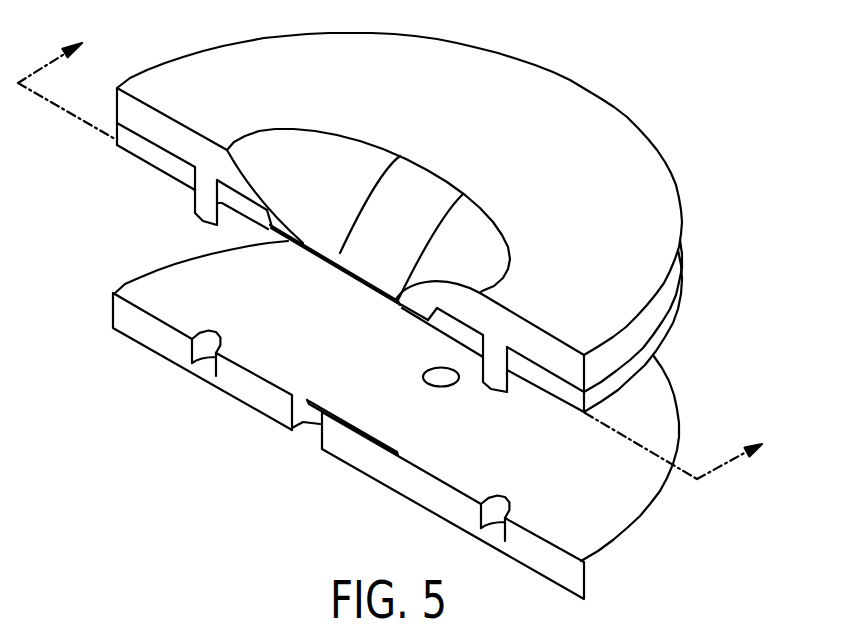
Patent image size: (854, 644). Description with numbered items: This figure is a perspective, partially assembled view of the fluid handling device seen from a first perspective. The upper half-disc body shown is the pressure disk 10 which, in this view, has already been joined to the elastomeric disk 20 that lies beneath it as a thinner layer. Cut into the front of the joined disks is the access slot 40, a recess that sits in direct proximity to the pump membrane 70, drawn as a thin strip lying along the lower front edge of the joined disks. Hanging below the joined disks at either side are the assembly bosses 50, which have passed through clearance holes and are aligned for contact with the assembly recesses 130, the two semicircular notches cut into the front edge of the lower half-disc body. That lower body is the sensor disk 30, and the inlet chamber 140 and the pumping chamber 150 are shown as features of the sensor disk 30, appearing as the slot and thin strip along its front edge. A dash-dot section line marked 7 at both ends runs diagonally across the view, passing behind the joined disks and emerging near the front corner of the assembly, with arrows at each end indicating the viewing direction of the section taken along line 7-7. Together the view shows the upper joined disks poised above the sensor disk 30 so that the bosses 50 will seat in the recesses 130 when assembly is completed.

The section line 7- 7 is at (404, 253).
The pressure disk 10 is at (657, 235).
The elastomeric disk 20 is at (600, 394).
The sensor disk 30 is at (595, 530).
The access slot 40 is at (432, 172).
The assembly bosses 50 is at (193, 200).
The pump membrane 70 is at (323, 265).
The assembly recesses 130 is at (200, 354).
The inlet chamber 140 is at (314, 433).
The pumping chamber 150 is at (374, 445).